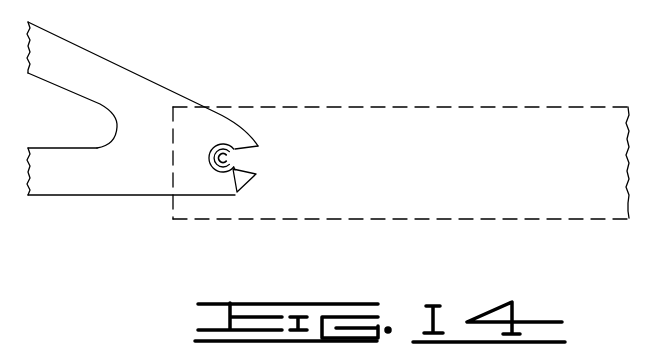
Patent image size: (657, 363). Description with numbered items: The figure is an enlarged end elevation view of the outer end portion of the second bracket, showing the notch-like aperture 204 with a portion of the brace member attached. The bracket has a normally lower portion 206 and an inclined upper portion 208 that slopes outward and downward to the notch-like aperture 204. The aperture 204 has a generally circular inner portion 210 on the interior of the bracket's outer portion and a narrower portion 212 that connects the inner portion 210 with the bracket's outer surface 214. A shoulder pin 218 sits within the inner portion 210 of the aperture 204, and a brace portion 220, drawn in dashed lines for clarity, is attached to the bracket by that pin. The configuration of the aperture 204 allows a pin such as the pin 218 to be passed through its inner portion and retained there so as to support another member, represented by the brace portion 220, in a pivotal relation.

The notch-like aperture 204 is at (270, 150).
The lower portion 206 is at (75, 187).
The inclined upper portion 208 is at (77, 57).
The inner portion 210 is at (235, 172).
The narrower portion 212 is at (235, 172).
The outer surface 214 is at (252, 132).
The shoulder pin 218 is at (232, 142).
The brace portion 220 is at (470, 105).